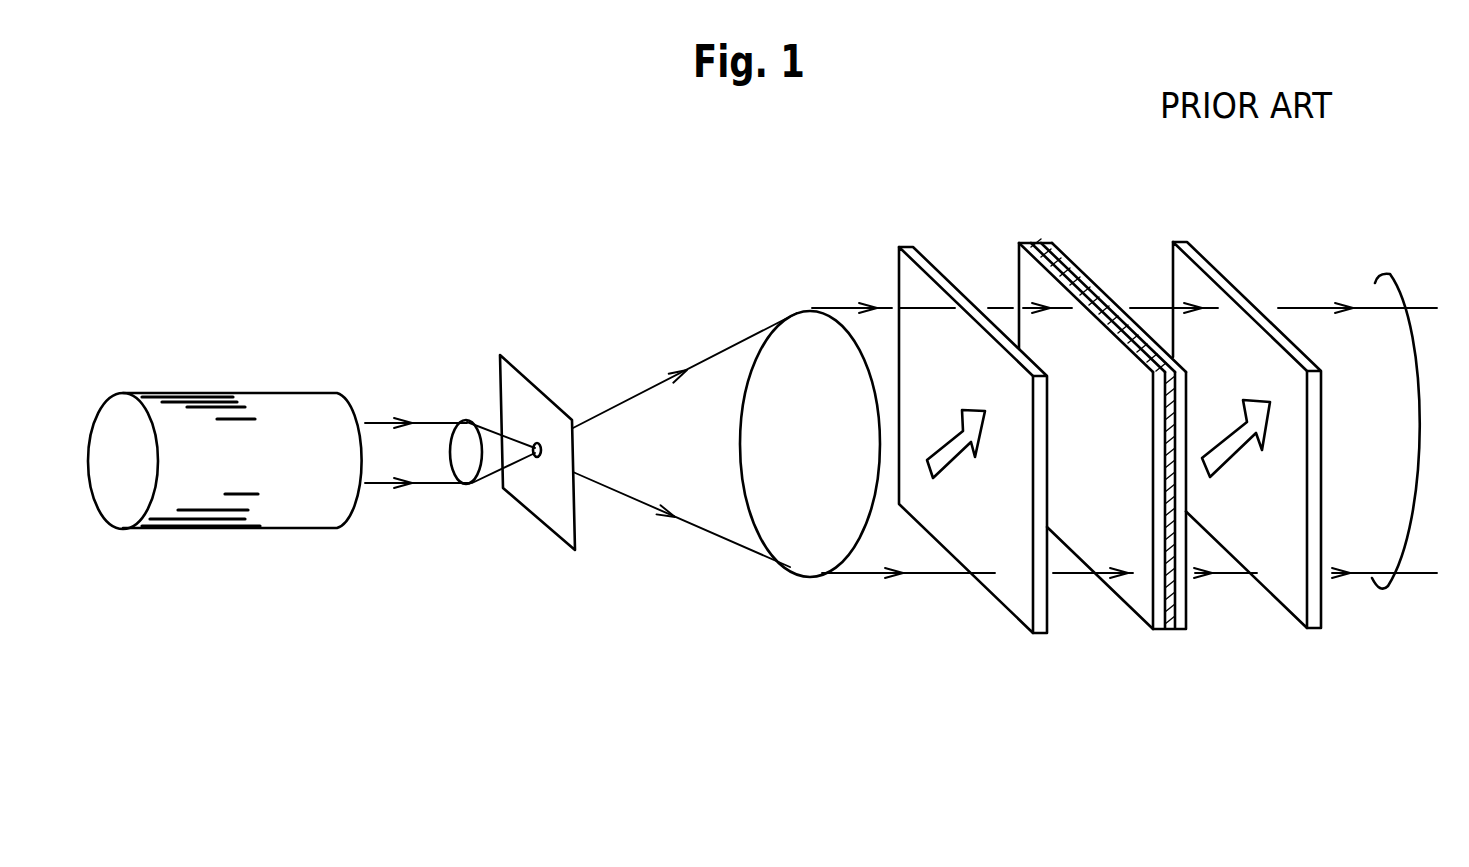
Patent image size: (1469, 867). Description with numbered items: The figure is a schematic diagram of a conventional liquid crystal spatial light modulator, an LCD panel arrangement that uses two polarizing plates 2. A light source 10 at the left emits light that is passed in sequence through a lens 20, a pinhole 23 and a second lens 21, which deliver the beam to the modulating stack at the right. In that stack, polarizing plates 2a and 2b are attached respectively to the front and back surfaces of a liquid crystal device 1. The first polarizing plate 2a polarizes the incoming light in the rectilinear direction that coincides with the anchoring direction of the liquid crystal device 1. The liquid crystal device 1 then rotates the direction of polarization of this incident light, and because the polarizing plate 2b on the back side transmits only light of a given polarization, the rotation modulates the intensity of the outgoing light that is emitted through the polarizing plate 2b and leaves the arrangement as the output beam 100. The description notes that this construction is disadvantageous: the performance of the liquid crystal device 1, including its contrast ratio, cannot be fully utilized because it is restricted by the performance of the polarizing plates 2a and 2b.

The light source 10 is at (213, 393).
The lens 20 is at (465, 420).
The pinhole 23 is at (537, 383).
The lens 21 is at (805, 311).
The polarizing plate 2a is at (1012, 612).
The liquid crystal device 1 is at (1038, 243).
The polarizing plate 2b is at (1264, 495).
The polarizing plates 2 is at (1127, 497).
The output light beam 100 is at (1383, 590).